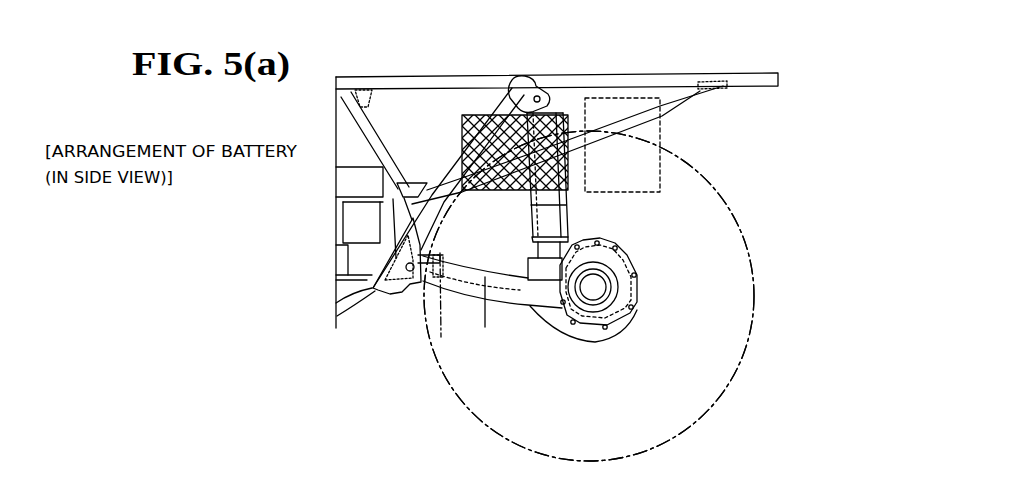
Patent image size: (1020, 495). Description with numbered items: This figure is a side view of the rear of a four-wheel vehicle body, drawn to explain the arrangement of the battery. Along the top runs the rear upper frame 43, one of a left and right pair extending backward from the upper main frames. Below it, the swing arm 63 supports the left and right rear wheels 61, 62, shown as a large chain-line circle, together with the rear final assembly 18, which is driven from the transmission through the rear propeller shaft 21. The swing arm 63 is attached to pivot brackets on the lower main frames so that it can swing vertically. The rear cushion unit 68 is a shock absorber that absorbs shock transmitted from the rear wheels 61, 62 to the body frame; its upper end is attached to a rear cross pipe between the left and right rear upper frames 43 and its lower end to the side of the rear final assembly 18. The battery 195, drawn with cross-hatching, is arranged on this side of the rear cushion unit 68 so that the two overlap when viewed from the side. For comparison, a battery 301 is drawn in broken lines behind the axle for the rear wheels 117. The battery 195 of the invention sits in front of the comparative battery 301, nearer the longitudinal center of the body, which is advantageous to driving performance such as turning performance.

The battery 195 is at (478, 114).
The rear upper frame 43 is at (746, 74).
The battery of comparative example 301 is at (660, 133).
The rear cushion unit 68 is at (567, 215).
The rear final assembly 18 is at (620, 267).
The axle for the rear wheels 117 is at (610, 297).
The swing arm 63 is at (463, 295).
The rear propeller shaft 21 is at (485, 290).
The rear wheel 61 is at (720, 382).
The rear wheel 62 is at (589, 296).